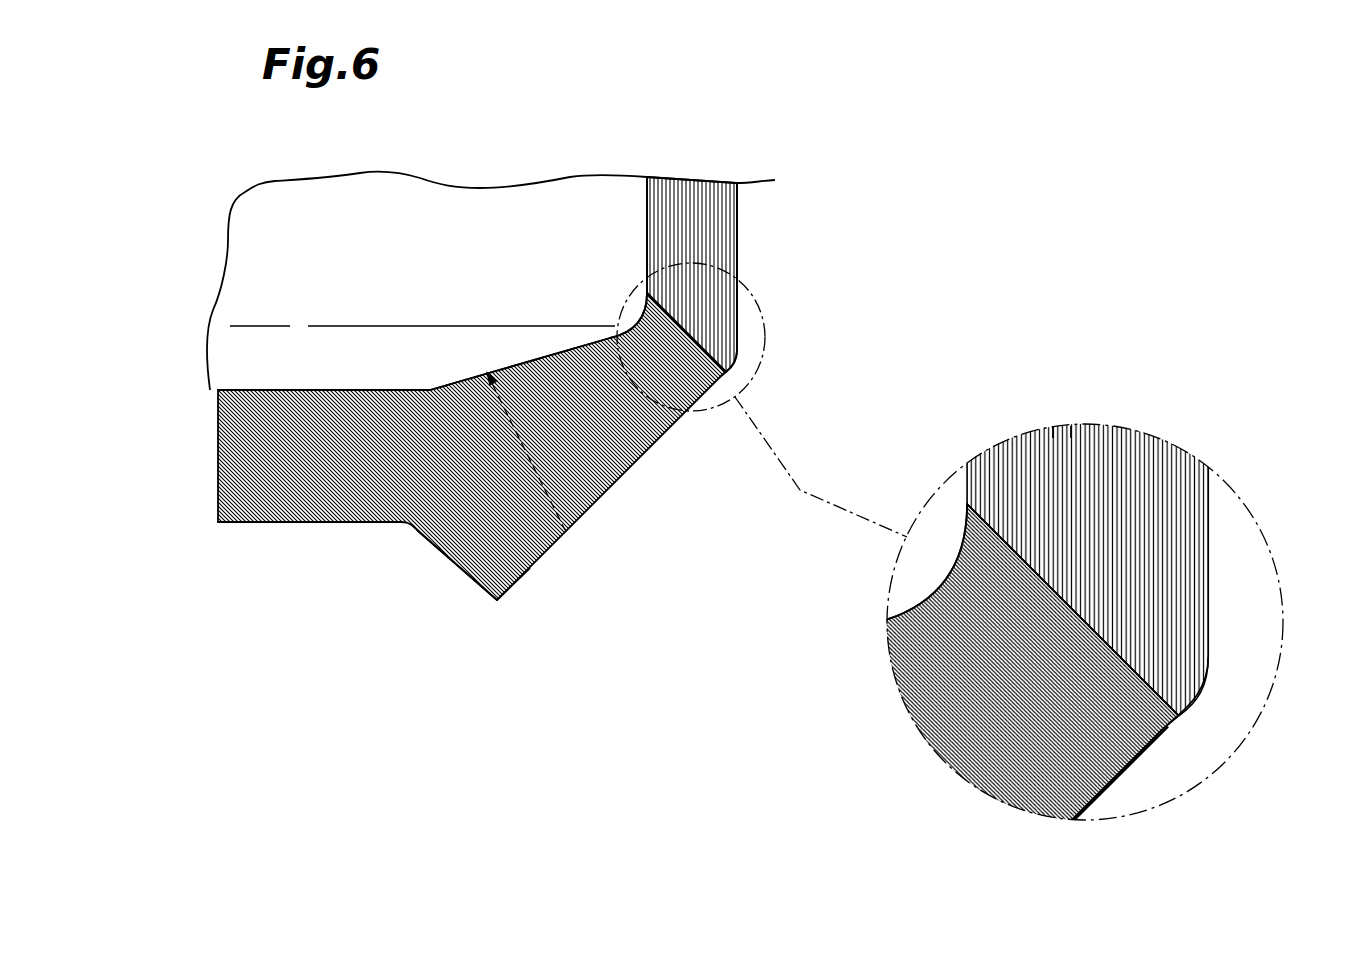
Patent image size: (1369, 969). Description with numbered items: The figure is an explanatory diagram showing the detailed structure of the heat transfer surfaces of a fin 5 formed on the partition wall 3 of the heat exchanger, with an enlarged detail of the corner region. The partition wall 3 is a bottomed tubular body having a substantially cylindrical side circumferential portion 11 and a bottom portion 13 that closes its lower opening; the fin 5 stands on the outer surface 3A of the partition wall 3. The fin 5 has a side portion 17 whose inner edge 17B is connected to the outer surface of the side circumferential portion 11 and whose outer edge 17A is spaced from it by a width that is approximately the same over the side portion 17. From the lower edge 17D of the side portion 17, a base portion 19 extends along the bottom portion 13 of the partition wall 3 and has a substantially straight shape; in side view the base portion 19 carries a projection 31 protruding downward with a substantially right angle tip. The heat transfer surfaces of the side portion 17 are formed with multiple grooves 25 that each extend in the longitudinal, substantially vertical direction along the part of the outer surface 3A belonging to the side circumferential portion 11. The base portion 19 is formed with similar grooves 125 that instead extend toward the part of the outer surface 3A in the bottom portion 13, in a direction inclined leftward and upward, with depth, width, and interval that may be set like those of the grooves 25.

The partition wall 3 is at (283, 273).
The outer surface 3A is at (647, 232).
The fin 5 is at (638, 484).
The side circumferential portion 11 is at (650, 190).
The bottom portion 13 is at (568, 528).
The side portion 17 is at (745, 228).
The outer edge 17A is at (740, 253).
The inner edge 17B is at (647, 205).
The lower edge 17D is at (737, 390).
The base portion 19 is at (347, 530).
The grooves 25 is at (1072, 427).
The projection 31 is at (497, 605).
The grooves 125 is at (1148, 768).